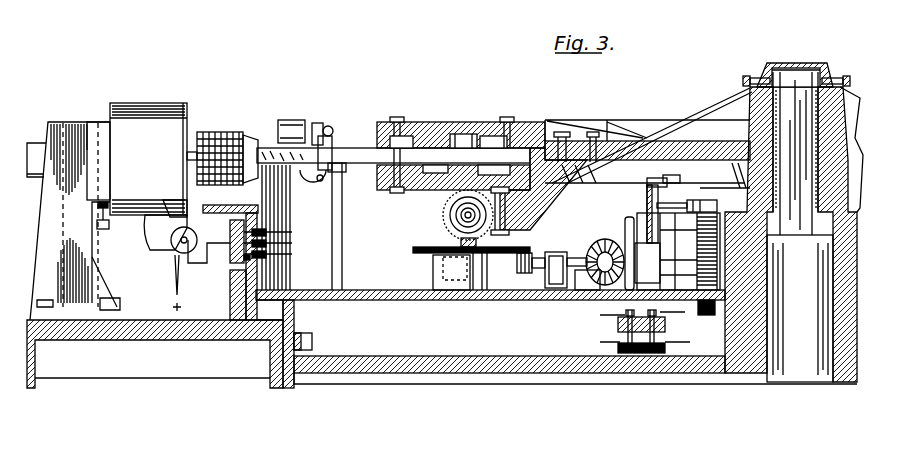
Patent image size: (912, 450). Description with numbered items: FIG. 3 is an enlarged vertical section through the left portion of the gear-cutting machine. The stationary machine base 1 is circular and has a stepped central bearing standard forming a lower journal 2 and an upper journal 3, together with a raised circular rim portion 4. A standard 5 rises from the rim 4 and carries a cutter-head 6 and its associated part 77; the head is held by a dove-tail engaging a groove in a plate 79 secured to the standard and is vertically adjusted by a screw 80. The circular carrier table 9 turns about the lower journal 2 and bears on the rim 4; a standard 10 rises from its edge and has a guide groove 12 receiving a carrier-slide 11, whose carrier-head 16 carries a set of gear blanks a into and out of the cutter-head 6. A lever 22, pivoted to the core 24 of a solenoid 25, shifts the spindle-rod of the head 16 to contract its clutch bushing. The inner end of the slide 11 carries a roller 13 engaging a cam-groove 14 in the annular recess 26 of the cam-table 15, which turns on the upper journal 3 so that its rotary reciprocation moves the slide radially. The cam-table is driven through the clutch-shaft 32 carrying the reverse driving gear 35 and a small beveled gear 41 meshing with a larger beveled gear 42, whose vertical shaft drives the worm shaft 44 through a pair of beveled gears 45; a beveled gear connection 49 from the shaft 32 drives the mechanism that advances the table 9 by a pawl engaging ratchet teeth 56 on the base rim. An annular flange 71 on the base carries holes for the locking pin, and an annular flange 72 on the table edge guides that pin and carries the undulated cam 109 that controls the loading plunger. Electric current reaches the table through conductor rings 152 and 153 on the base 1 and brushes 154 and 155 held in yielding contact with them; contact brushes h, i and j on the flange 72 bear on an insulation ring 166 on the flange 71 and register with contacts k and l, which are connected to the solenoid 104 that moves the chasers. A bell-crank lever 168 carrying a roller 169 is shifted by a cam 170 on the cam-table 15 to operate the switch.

The stationary machine base 1 is at (432, 358).
The journal 2 is at (748, 316).
The journal 3 is at (780, 137).
The raised circular rim portion 4 is at (128, 336).
The standard 5 is at (73, 221).
The cutter-head 6 is at (153, 160).
The carrier table 9 is at (490, 301).
The standard 10 is at (343, 240).
The carrier-slide 11 is at (358, 150).
The guide groove 12 is at (342, 170).
The roller 13 is at (460, 135).
The cam-groove 14 is at (407, 136).
The cam-table 15 is at (632, 148).
The carrier-head 16 is at (250, 134).
The lever 22 is at (333, 128).
The core 24 is at (318, 126).
The solenoid 25 is at (295, 120).
The annular recess 26 is at (410, 166).
The clutch-shaft 32 is at (573, 301).
The reverse driving gear 35 is at (717, 270).
The small beveled gear 41 is at (538, 251).
The larger beveled gear 42 is at (505, 255).
The worm shaft 44 is at (462, 238).
The beveled gears 45 is at (446, 242).
The beveled gear connection 49 is at (626, 250).
The ratchet teeth 56 is at (313, 338).
The annular flange 71 is at (230, 308).
The annular flange 72 is at (264, 279).
The motor cover 77 is at (133, 118).
The plate 79 is at (95, 124).
The screw 80 is at (105, 252).
The solenoid 104 is at (172, 252).
The undulated cam 109 is at (229, 252).
The conductor ring 152 is at (630, 348).
The conductor ring 153 is at (655, 348).
The electric brush 154 is at (618, 314).
The electric brush 155 is at (667, 328).
The insulation ring 166 is at (232, 272).
The bell-crank lever 168 is at (672, 203).
The roller 169 is at (647, 190).
The cam 170 is at (672, 176).
The gear blank a is at (220, 132).
The contact brush h is at (278, 256).
The contact brush i is at (278, 245).
The contact brush j is at (278, 233).
The contact k is at (229, 258).
The contact l is at (229, 244).